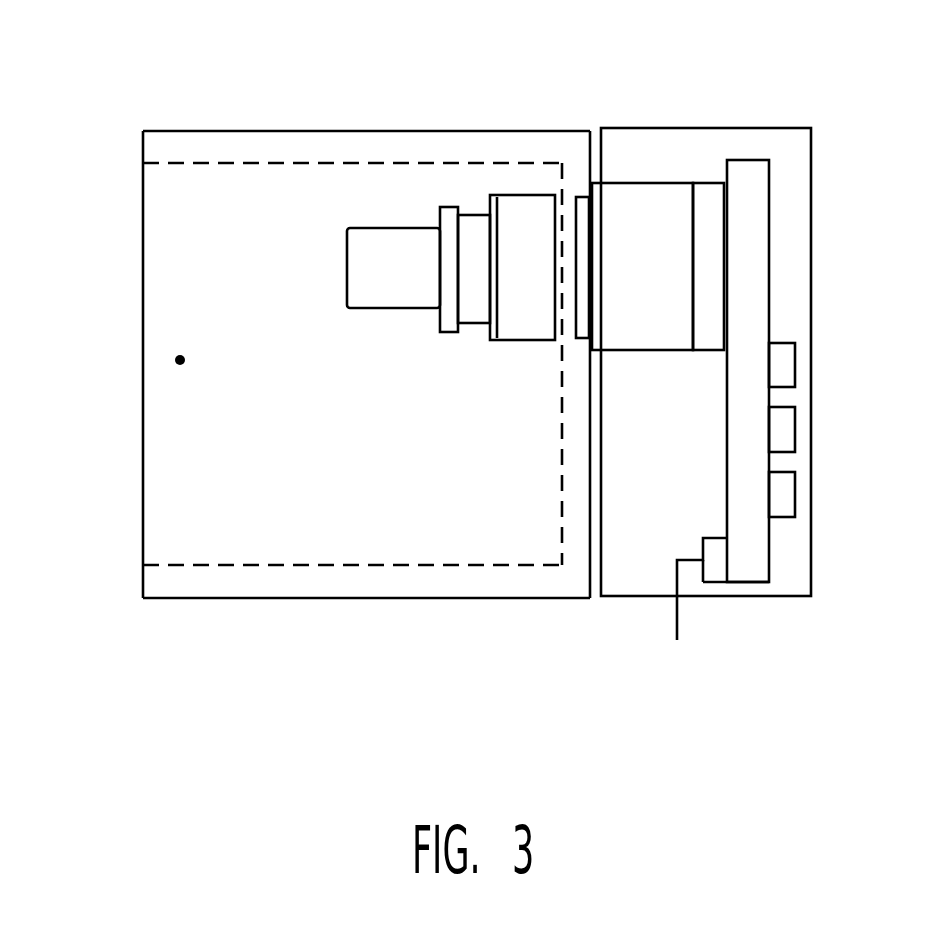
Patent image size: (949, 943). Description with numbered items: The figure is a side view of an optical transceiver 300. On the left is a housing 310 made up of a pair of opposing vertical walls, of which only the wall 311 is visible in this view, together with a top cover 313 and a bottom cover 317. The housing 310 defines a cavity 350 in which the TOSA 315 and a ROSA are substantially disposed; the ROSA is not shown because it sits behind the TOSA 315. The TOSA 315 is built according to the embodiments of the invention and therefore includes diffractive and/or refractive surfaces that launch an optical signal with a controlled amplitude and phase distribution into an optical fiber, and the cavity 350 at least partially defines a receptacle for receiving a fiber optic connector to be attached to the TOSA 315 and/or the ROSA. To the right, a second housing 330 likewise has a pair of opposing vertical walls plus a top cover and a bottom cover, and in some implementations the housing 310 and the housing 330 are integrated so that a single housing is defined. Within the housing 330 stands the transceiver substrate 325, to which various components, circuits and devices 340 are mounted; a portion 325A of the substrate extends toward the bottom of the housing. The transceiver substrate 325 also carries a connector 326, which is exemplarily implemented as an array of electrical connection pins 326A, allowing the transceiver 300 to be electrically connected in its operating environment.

The optical transceiver 300 is at (340, 88).
The housing 310 is at (575, 150).
The wall 311 is at (212, 442).
The top cover 313 is at (177, 131).
The TOSA 315 is at (665, 222).
The bottom cover 317 is at (327, 599).
The transceiver substrate 325 is at (752, 285).
The circuit board mounting portion 325A is at (727, 490).
The connector 326 is at (640, 630).
The electrical connection pins 326A is at (683, 617).
The housing 330 is at (801, 145).
The components, circuits and devices 340 is at (809, 333).
The cavity 350 is at (180, 360).